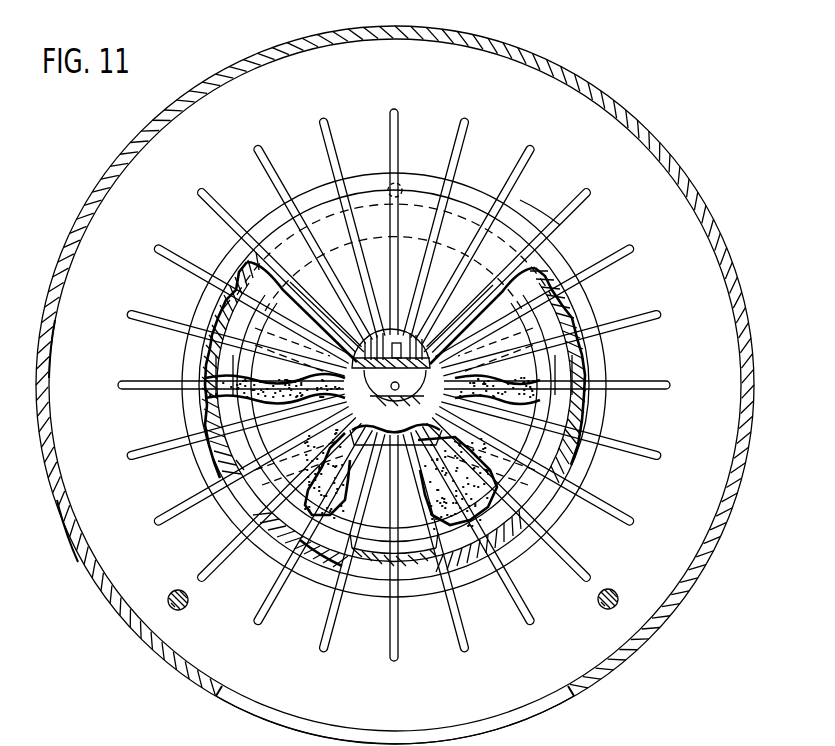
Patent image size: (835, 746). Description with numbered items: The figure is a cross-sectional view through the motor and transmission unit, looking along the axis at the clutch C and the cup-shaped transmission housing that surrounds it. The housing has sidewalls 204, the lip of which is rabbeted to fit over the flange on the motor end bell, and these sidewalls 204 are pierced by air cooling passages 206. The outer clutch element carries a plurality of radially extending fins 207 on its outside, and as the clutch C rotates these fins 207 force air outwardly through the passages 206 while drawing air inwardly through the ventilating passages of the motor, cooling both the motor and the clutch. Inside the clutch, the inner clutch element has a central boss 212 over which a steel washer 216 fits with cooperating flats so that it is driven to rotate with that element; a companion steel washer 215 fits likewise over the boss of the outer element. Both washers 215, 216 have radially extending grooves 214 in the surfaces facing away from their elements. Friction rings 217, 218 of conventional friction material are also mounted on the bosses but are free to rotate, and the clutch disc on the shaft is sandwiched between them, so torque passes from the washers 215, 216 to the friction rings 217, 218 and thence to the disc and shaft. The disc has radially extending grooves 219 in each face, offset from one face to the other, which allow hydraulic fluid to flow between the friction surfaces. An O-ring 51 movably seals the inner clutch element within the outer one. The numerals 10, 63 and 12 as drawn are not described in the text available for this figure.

The sidewalls 204 is at (525, 42).
The air cooling passages 206 is at (540, 712).
The clutch C is at (558, 190).
The radially extending fins 207 is at (324, 120).
The steel washer 215 is at (218, 356).
The friction ring 217 is at (220, 406).
The radially extending grooves 219 is at (228, 430).
The radially extending grooves 214 is at (222, 305).
The pivot 63 is at (391, 387).
The central boss 212 is at (378, 433).
The stippled web 10 is at (332, 378).
The friction ring 218 is at (268, 566).
The steel washer 216 is at (372, 562).
The O-ring 51 is at (240, 522).
The section line 12 is at (585, 386).